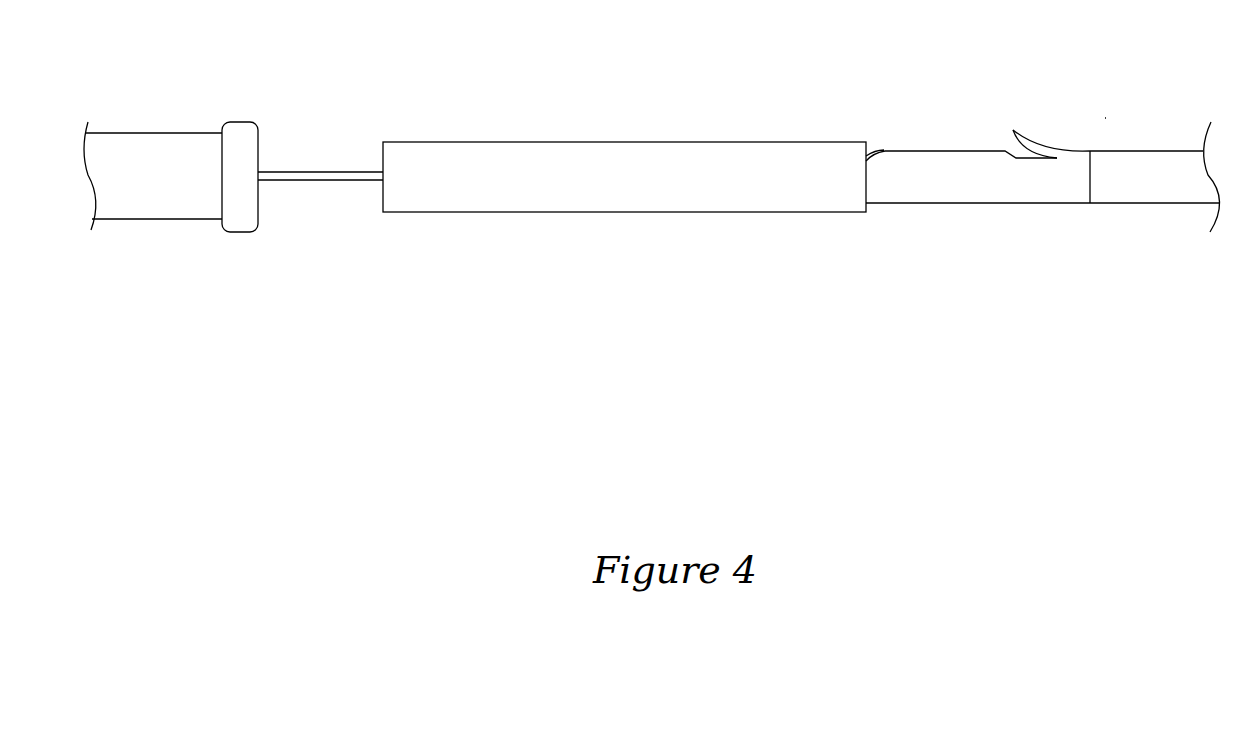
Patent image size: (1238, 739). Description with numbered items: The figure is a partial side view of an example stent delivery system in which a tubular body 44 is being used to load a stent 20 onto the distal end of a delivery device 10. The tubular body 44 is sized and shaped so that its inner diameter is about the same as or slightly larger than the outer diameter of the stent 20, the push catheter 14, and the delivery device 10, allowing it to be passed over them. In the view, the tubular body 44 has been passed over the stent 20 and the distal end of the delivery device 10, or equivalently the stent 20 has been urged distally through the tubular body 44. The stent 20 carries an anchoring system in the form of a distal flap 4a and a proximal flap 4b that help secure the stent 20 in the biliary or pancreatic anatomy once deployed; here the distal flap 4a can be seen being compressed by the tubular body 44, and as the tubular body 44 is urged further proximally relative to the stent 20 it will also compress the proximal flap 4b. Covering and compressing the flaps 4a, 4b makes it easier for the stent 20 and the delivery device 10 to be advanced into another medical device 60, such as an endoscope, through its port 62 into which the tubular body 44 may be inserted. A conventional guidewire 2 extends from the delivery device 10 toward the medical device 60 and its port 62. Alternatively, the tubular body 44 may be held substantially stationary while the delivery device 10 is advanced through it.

The delivery device 10 is at (1105, 118).
The push catheter 14 is at (1153, 195).
The guidewire 2 is at (322, 175).
The stent 20 is at (952, 156).
The tubular body 44 is at (520, 150).
The distal flap 4a is at (877, 146).
The proximal flap 4b is at (1028, 142).
The medical device 60 is at (155, 140).
The port 62 is at (240, 120).